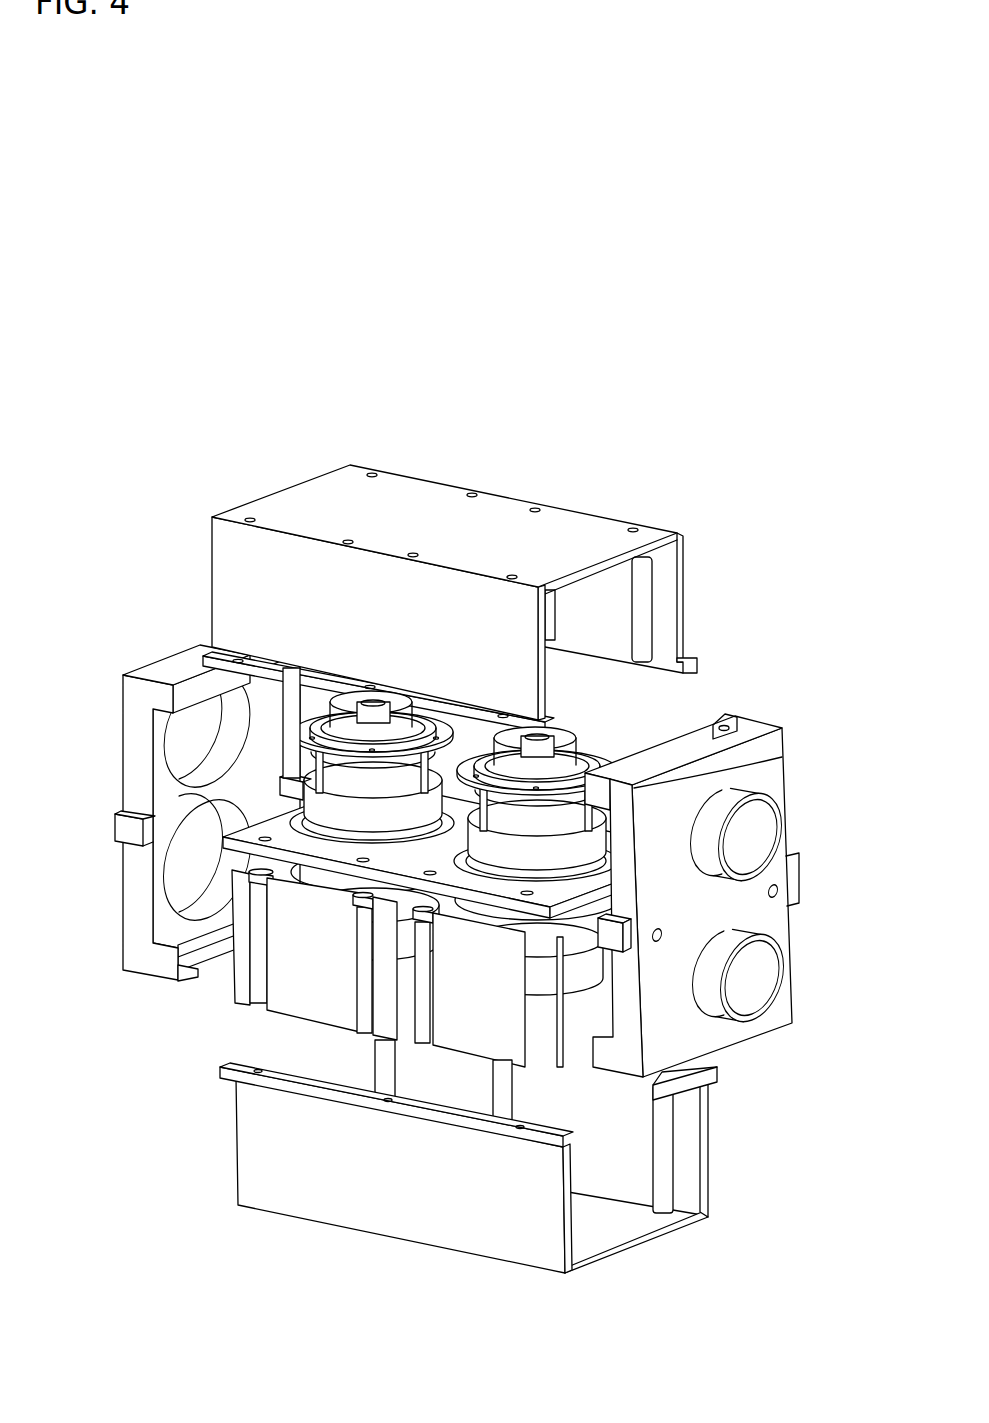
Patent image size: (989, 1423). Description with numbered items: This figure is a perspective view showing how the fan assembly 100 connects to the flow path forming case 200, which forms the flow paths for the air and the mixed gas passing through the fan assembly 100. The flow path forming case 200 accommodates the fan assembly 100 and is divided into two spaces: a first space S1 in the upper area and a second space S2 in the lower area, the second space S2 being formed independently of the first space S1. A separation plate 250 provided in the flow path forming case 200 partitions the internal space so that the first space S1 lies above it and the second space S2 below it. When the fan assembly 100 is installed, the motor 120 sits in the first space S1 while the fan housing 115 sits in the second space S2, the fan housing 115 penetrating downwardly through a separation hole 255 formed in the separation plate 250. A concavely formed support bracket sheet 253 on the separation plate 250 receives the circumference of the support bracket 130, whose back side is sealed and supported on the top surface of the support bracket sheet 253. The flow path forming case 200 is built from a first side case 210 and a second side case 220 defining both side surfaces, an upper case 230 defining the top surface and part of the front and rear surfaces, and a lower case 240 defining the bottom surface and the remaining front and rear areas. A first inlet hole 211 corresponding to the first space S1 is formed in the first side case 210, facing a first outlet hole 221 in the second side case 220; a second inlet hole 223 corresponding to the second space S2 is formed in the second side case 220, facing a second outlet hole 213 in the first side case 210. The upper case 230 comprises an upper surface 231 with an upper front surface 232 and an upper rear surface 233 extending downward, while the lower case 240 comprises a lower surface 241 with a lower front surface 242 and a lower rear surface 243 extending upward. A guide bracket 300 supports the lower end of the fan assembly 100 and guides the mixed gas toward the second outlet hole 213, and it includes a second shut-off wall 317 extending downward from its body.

The fan assembly 100 is at (620, 747).
The fan housing 115 is at (766, 752).
The motor 120 is at (578, 843).
The support bracket 130 is at (520, 800).
The flow path forming case 200 is at (460, 873).
The first side case 210 is at (133, 695).
The first inlet hole 211 is at (176, 722).
The second outlet hole 213 is at (181, 856).
The second side case 220 is at (765, 766).
The first outlet hole 221 is at (748, 843).
The second inlet hole 223 is at (750, 971).
The upper case 230 is at (430, 462).
The upper surface 231 is at (308, 523).
The upper front surface 232 is at (465, 597).
The upper rear surface 233 is at (681, 551).
The lower case 240 is at (413, 1258).
The lower surface 241 is at (617, 1256).
The lower front surface 242 is at (528, 1250).
The lower rear surface 243 is at (708, 1150).
The separation plate 250 is at (238, 843).
The support bracket sheet 253 is at (578, 902).
The separation hole 255 is at (583, 868).
The guide bracket 300 is at (247, 988).
The second shut-off wall 317 is at (590, 1013).
The first space S1 is at (570, 608).
The second space S2 is at (612, 1183).